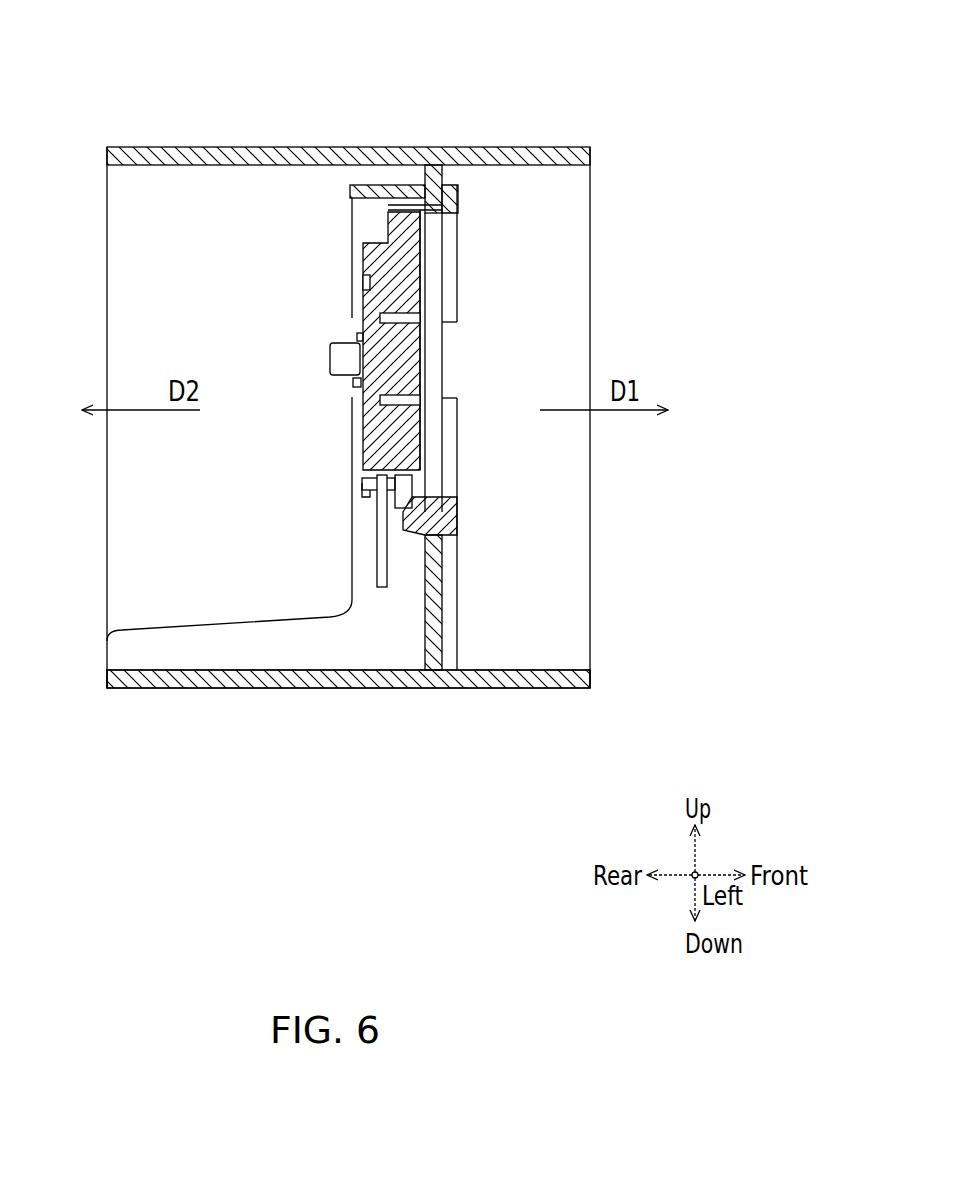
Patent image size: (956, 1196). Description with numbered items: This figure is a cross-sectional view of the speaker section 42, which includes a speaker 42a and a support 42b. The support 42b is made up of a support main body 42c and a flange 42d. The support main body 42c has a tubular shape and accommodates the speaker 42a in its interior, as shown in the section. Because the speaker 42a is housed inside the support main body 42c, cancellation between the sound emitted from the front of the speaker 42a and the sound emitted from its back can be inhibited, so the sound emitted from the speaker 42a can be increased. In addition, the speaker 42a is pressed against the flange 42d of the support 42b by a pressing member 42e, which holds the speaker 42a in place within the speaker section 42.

The speaker section 42 is at (422, 391).
The speaker 42a is at (452, 353).
The support 42b is at (422, 469).
The support main body 42c is at (565, 690).
The flange 42d is at (458, 521).
The pressing member 42e is at (357, 335).